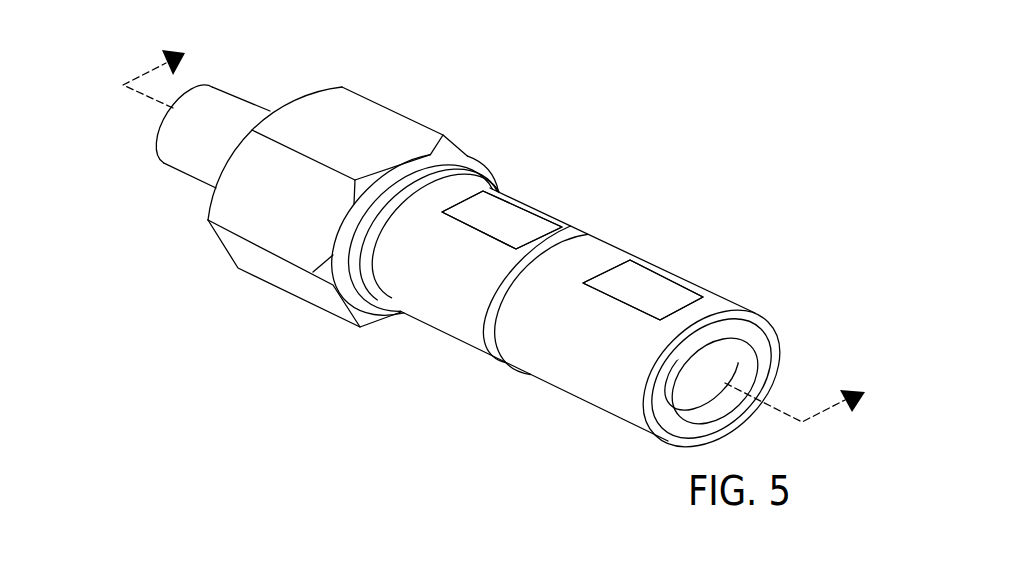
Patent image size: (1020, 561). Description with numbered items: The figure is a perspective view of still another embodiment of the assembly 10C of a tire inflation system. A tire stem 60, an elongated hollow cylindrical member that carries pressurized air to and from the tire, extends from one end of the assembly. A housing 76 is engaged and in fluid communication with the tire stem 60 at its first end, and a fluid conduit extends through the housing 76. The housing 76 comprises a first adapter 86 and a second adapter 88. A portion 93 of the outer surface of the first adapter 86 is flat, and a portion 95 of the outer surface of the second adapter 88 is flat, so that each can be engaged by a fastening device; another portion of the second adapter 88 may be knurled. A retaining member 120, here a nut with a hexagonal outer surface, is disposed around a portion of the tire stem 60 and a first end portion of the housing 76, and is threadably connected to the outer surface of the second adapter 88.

The assembly 10C is at (112, 44).
The tire stem 60 is at (158, 163).
The retaining member 120 is at (217, 237).
The housing 76 is at (598, 240).
The portion of outer surface of second adapter 95 is at (488, 208).
The second adapter 88 is at (525, 207).
The portion of outer surface of first adapter 93 is at (630, 280).
The first adapter 86 is at (670, 280).